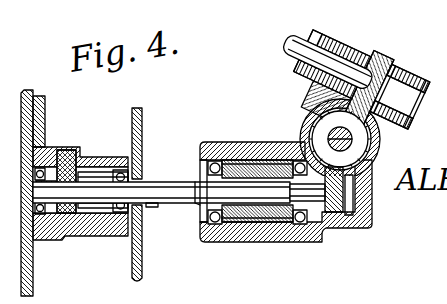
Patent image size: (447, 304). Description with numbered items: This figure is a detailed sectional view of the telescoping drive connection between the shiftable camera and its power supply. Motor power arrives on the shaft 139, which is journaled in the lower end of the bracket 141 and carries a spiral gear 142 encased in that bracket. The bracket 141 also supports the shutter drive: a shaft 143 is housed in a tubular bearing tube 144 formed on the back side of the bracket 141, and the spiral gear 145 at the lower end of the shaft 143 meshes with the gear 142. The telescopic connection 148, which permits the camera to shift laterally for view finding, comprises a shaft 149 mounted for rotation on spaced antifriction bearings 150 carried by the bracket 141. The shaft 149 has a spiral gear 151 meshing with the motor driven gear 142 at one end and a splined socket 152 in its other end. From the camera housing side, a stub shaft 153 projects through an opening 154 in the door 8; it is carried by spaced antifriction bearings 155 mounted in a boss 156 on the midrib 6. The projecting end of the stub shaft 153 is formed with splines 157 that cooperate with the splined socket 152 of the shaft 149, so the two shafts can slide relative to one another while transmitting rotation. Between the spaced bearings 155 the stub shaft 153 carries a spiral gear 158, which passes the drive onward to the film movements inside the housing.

The midrib 6 is at (45, 113).
The door 8 is at (137, 268).
The shaft 139 is at (404, 132).
The bracket 141 is at (373, 66).
The spiral gear 142 is at (316, 130).
The shaft 143 is at (287, 42).
The tubular bearing tube 144 is at (327, 47).
The spiral gear 145 is at (393, 70).
The telescopic connection 148 is at (175, 170).
The shaft 149 is at (250, 224).
The antifriction bearings 150 is at (213, 224).
The spiral gear 151 is at (336, 229).
The splined socket 152 is at (282, 207).
The stub shaft 153 is at (102, 192).
The opening 154 is at (152, 207).
The antifriction bearings 155 is at (120, 170).
The boss 156 is at (60, 240).
The splines 157 is at (196, 206).
The spiral gear 158 is at (68, 178).